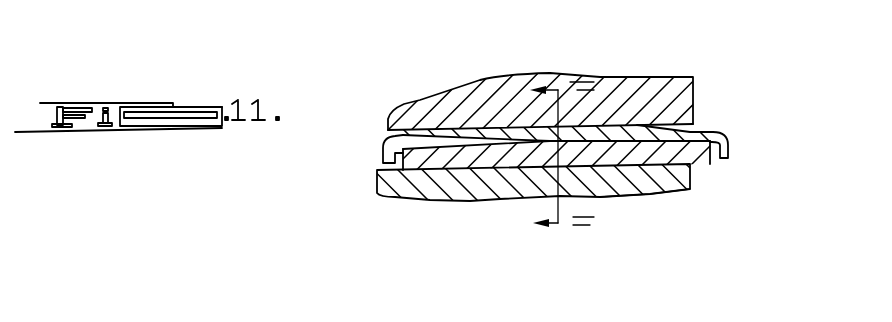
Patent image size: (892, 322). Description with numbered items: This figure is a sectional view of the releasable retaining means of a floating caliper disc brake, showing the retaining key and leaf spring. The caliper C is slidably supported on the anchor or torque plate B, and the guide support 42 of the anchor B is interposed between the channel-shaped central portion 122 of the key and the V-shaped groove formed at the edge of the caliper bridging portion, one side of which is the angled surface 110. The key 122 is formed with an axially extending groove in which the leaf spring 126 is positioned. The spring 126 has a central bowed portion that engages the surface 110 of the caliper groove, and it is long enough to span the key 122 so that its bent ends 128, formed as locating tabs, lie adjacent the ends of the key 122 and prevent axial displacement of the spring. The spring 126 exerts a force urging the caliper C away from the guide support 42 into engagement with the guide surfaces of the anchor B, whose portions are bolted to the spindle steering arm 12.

The angled surface 110 is at (540, 78).
The steering arm 12 is at (535, 169).
The leaf spring 126 is at (553, 77).
The floating brake caliper C is at (571, 70).
The bent ends 128 is at (544, 140).
The guide support 42 is at (545, 203).
The central portion of key 122 is at (553, 201).
The anchor or torque plate B is at (649, 215).